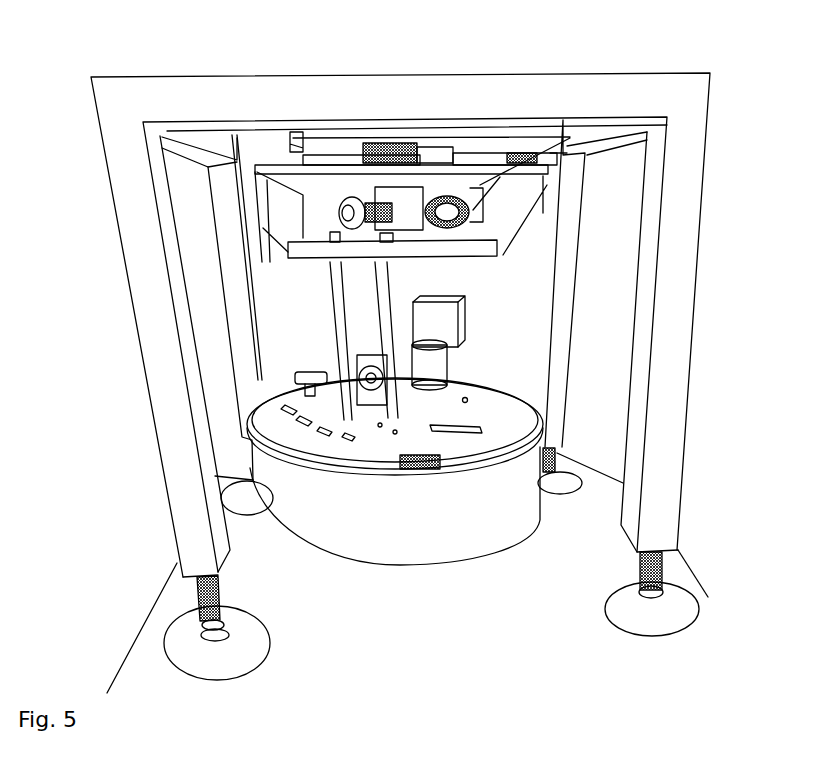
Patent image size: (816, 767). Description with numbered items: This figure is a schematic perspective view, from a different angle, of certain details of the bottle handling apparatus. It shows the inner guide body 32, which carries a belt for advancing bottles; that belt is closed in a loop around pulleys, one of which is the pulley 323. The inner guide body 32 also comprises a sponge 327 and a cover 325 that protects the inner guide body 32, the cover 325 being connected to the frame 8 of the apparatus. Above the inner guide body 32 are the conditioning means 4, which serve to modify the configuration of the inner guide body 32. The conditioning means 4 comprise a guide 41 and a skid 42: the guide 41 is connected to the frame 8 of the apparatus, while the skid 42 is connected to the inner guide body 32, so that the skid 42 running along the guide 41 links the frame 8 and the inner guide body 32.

The conditioning means 4 is at (287, 115).
The guide 41 is at (388, 142).
The skid 42 is at (442, 150).
The frame 8 is at (458, 246).
The inner guide body 32 is at (360, 583).
The pulley 323 is at (473, 462).
The cover 325 is at (460, 370).
The sponge 327 is at (438, 532).